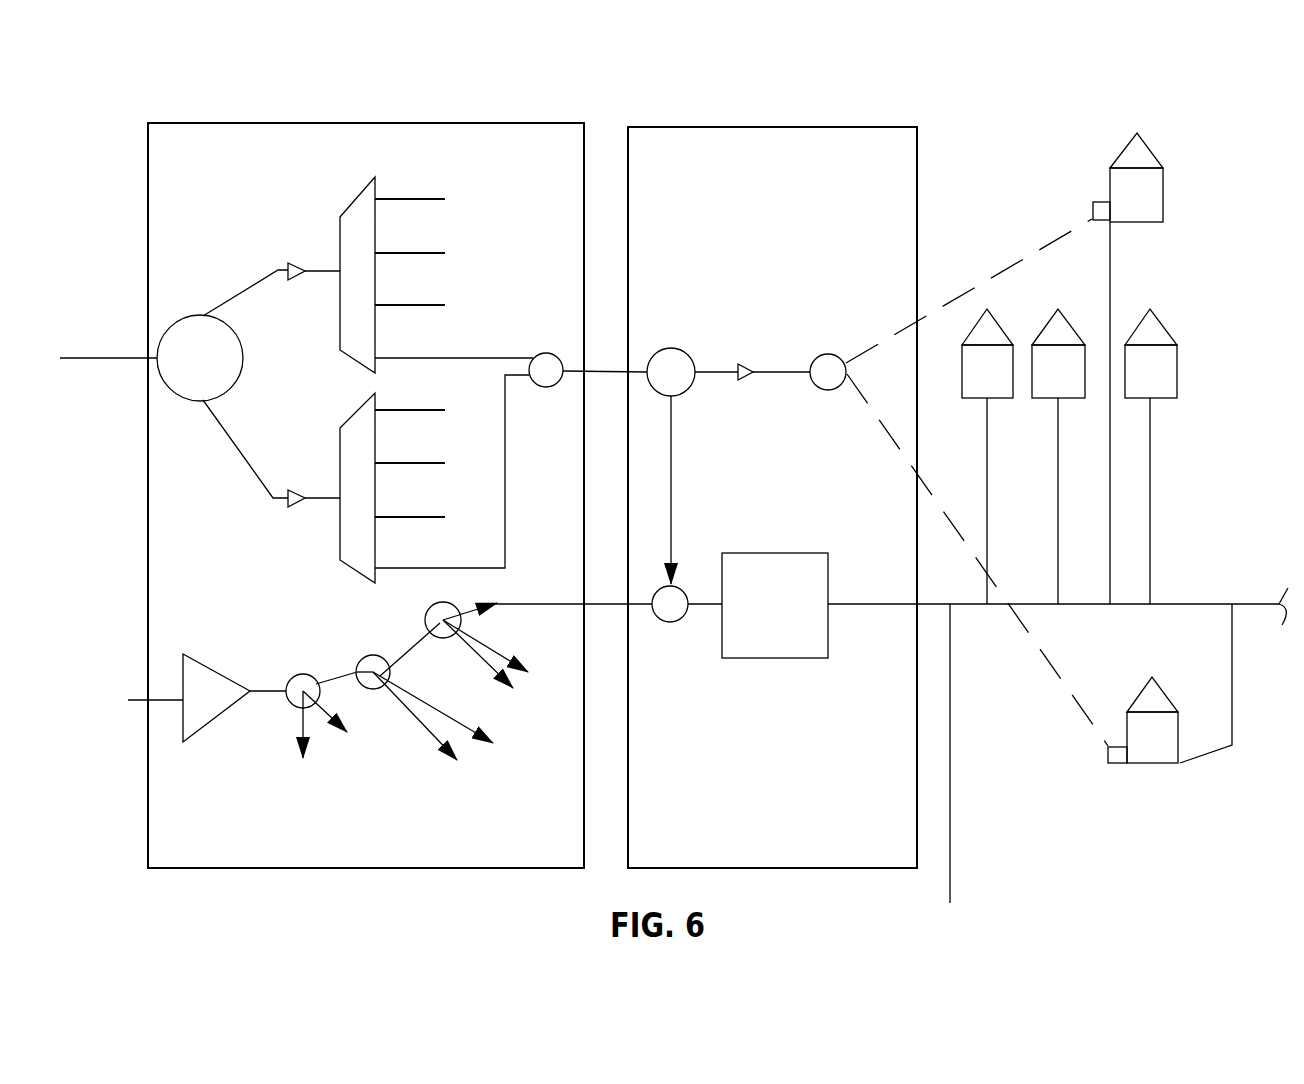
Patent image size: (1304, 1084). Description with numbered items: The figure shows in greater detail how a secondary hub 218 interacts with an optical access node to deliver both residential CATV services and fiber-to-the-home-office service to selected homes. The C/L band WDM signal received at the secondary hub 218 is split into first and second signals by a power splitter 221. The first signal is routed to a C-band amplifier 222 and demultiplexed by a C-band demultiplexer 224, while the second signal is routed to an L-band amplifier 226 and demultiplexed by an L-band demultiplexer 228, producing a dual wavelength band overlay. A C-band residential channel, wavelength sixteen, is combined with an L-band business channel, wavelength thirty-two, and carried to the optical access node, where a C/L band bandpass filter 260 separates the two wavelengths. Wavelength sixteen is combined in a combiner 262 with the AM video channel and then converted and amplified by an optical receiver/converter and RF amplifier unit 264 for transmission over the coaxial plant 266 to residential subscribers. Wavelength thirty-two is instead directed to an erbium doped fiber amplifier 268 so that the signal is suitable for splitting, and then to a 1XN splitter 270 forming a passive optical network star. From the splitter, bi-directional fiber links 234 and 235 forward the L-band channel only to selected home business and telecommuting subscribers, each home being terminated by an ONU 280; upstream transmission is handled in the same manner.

The secondary hub 218 is at (483, 844).
The power splitter 221 is at (220, 373).
The C-band amplifier 222 is at (296, 266).
The C-band demultiplexer 224 is at (364, 367).
The L-band amplifier 226 is at (300, 508).
The L-band demultiplexer 228 is at (370, 583).
The fiber link 234 is at (1028, 258).
The fiber link 235 is at (1050, 660).
The C/L band bandpass filter 260 is at (692, 355).
The combiner 262 is at (685, 618).
The optical receiver/converter and RF amplifier unit 264 is at (810, 658).
The coaxial plant 266 is at (1073, 610).
The erbium doped fiber amplifier 268 is at (750, 372).
The 1XN splitter 270 is at (817, 357).
The ONU 280 is at (1095, 202).